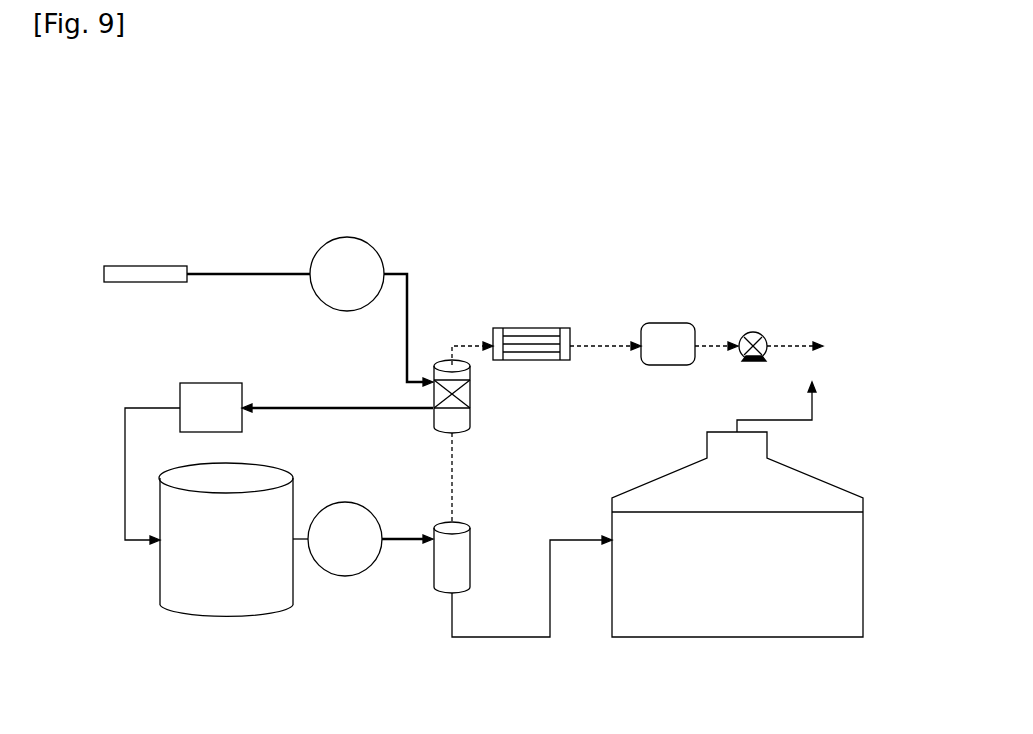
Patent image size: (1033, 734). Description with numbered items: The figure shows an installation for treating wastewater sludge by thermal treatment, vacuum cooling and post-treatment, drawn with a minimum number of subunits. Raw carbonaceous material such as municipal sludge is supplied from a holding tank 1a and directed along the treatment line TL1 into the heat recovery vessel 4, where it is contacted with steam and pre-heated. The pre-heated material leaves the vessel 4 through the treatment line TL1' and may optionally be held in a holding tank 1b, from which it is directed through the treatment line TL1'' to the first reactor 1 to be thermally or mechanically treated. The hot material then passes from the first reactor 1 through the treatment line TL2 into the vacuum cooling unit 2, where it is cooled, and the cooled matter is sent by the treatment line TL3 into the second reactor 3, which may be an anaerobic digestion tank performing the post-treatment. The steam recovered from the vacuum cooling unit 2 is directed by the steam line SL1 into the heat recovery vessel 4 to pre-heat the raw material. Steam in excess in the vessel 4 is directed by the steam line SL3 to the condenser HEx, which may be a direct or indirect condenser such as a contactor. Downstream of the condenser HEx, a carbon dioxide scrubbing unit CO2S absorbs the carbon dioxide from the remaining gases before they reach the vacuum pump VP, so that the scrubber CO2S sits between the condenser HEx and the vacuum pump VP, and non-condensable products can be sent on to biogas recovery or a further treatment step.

The holding tank 1a is at (150, 268).
The treatment line TL1 is at (310, 293).
The steam line SL3 is at (455, 343).
The condenser HEx is at (528, 328).
The CO2 scrubbing unit CO2S is at (655, 323).
The vacuum pump VP is at (749, 332).
The holding tank 1b is at (200, 400).
The treatment line TL1' is at (337, 373).
The treatment line TL1'' is at (114, 476).
The heat recovery vessel 4 is at (470, 395).
The steam line SL1 is at (448, 478).
The vacuum cooling unit 2 is at (470, 557).
The treatment line TL2 is at (397, 545).
The first reactor 1 is at (230, 590).
The second reactor 3 is at (748, 612).
The treatment line TL3 is at (495, 640).